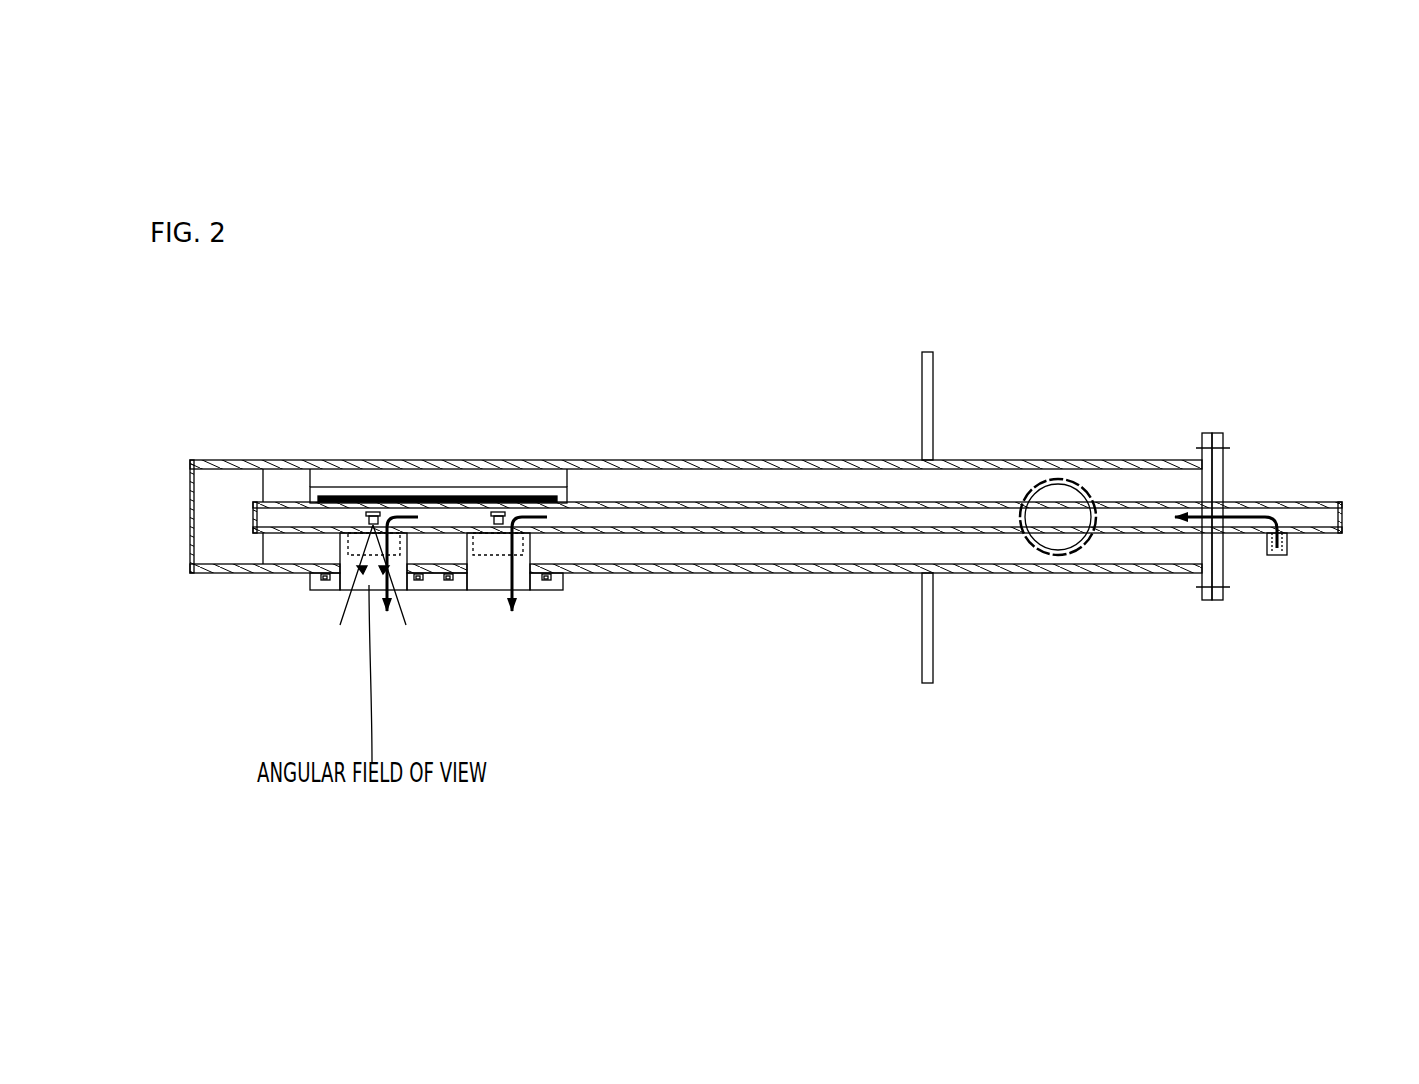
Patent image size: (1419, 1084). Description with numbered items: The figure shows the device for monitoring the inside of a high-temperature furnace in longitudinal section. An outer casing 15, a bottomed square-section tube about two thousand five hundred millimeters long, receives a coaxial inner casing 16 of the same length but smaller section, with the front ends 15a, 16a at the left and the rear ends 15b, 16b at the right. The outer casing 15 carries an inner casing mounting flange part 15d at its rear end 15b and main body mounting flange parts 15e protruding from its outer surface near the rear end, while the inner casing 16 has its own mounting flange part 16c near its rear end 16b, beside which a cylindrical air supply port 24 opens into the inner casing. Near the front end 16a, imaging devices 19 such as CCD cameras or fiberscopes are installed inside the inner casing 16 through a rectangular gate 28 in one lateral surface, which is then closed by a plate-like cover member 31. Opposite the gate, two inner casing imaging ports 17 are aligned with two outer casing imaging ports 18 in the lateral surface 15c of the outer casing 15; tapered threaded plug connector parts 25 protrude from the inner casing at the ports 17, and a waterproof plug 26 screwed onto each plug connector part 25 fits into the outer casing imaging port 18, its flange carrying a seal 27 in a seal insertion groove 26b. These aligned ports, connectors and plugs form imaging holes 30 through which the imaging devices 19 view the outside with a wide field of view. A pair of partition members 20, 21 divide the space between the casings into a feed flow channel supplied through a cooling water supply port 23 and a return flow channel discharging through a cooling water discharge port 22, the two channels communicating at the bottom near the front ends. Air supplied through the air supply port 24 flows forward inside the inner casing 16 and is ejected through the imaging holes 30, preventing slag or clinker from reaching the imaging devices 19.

The outer casing 15 is at (231, 457).
The front end of outer casing 15a is at (190, 480).
The rear end of outer casing 15b is at (1213, 468).
The lateral surface of outer casing 15c is at (672, 575).
The inner casing mounting flange part 15d is at (1204, 434).
The main body mounting flange parts 15e is at (933, 410).
The inner casing 16 is at (245, 529).
The front end of inner casing 16a is at (250, 521).
The rear end of inner casing 16b is at (1343, 520).
The mounting flange part 16c is at (1222, 434).
The inner casing imaging ports 17 is at (362, 510).
The outer casing imaging ports 18 is at (348, 556).
The imaging devices 19 is at (385, 518).
The partition member 20 is at (302, 552).
The partition member 21 is at (745, 482).
The cooling water discharge port 22 is at (1085, 548).
The cooling water supply port 23 is at (1083, 545).
The air supply port 24 is at (1290, 540).
The plug connector parts 25 is at (322, 488).
The waterproof plug 26 is at (312, 578).
The seal insertion groove 26b is at (552, 586).
The seal 27 is at (549, 581).
The gate 28 is at (442, 497).
The imaging holes 30 is at (365, 595).
The cover member 31 is at (366, 515).